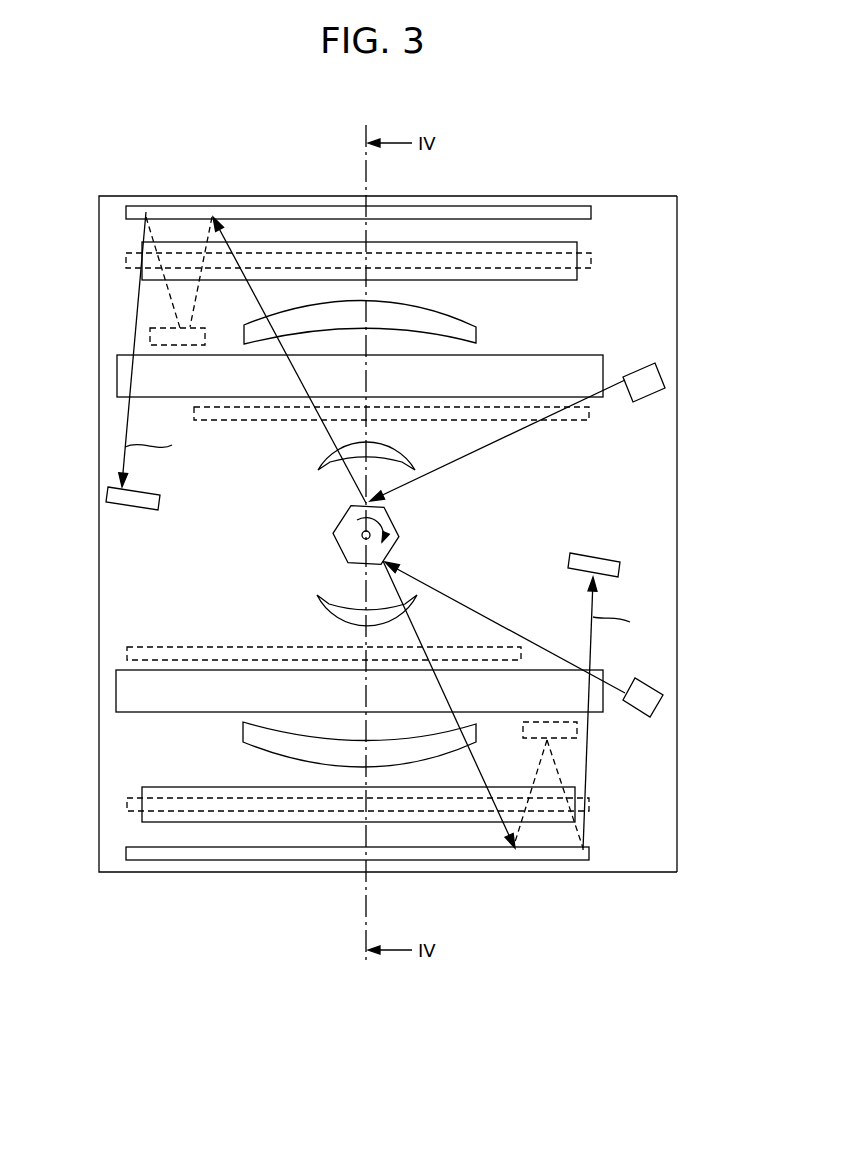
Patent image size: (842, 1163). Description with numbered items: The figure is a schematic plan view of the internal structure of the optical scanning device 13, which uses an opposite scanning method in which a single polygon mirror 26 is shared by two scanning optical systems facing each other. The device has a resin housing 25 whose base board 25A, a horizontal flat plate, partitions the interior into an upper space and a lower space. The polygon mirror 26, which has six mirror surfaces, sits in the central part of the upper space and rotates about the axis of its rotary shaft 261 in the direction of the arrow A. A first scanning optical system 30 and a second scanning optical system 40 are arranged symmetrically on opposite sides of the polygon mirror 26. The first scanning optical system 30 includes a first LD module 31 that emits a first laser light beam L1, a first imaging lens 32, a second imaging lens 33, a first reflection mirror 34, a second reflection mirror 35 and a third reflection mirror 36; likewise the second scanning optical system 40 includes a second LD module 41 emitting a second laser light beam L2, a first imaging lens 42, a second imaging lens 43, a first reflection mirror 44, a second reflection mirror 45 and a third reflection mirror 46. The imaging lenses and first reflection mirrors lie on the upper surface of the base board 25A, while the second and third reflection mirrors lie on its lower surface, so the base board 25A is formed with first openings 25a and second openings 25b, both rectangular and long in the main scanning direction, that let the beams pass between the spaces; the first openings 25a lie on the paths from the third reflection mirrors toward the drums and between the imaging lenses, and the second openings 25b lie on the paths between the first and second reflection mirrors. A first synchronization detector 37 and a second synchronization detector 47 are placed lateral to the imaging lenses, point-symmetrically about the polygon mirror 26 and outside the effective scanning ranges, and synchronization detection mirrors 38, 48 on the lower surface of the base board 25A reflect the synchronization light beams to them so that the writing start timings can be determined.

The optical scanning device 13 is at (436, 469).
The housing 25 is at (436, 534).
The base board 25A is at (655, 525).
The first openings 25a is at (572, 355).
The second openings 25b is at (530, 283).
The polygon mirror 26 is at (356, 534).
The rotary shaft 261 is at (357, 537).
The first scanning optical system 30 is at (346, 715).
The first LD module 31 is at (638, 717).
The first imaging lens 32 is at (410, 603).
The second imaging lens 33 is at (275, 753).
The first reflection mirror 34 is at (470, 862).
The second reflection mirror 35 is at (185, 783).
The third reflection mirror 36 is at (490, 647).
The first synchronization detector 37 is at (602, 553).
The synchronization detection mirror 38 is at (583, 757).
The second scanning optical system 40 is at (423, 359).
The second LD module 41 is at (652, 395).
The first imaging lens 42 is at (398, 450).
The second imaging lens 43 is at (448, 313).
The first reflection mirror 44 is at (530, 203).
The second reflection mirror 45 is at (562, 248).
The third reflection mirror 46 is at (508, 422).
The second synchronization detector 47 is at (132, 510).
The synchronization detection mirror 48 is at (192, 322).
The rotation direction arrow A is at (392, 516).
The first laser light beam L1 is at (472, 603).
The second laser light beam L2 is at (468, 460).